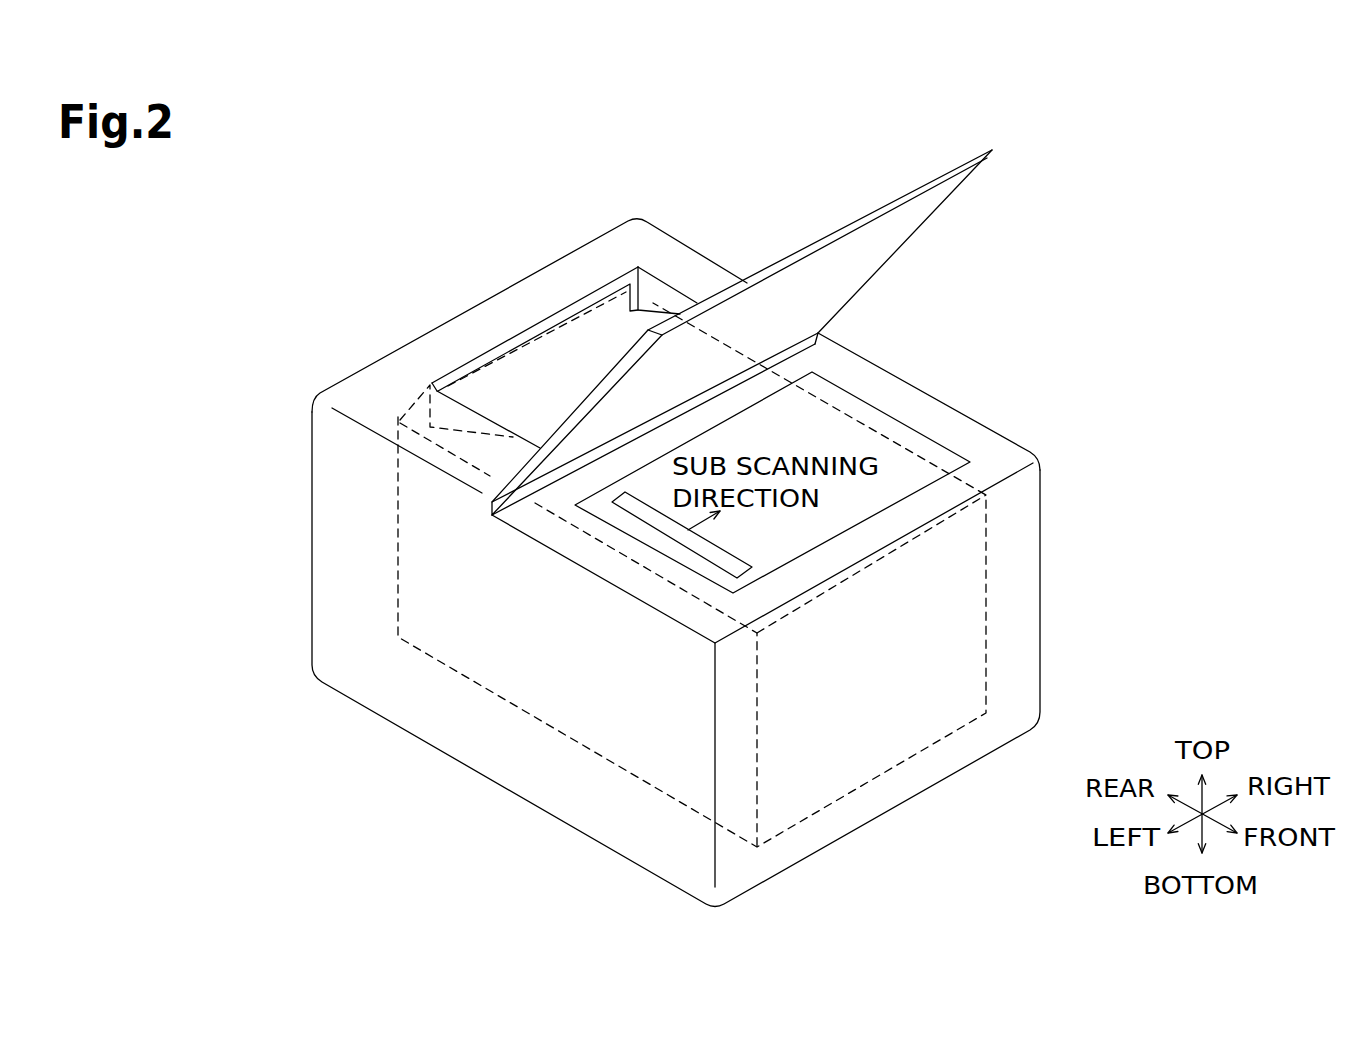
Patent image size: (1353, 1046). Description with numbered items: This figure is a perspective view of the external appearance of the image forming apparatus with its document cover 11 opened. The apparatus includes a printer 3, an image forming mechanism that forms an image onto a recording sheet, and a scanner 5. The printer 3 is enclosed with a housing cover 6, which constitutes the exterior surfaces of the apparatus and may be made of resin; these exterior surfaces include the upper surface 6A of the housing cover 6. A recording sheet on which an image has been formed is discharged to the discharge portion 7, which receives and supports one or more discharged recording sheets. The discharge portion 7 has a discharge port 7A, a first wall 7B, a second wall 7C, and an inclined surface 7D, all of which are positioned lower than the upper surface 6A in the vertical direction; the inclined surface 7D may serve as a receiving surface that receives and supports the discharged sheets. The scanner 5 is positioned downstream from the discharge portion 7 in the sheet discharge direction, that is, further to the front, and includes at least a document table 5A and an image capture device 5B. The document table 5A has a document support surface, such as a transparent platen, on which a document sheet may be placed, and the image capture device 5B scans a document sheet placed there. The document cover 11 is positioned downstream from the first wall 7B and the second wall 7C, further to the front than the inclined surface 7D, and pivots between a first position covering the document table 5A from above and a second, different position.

The printer 3 is at (986, 630).
The scanner 5 is at (985, 480).
The document table 5A is at (867, 450).
The image capture device 5B is at (652, 525).
The housing cover 6 is at (1042, 547).
The upper surface 6A is at (640, 243).
The discharge portion 7 is at (530, 357).
The discharge port 7A is at (577, 318).
The first wall 7B is at (403, 419).
The second wall 7C is at (663, 297).
The inclined surface 7D is at (558, 393).
The document cover 11 is at (995, 162).